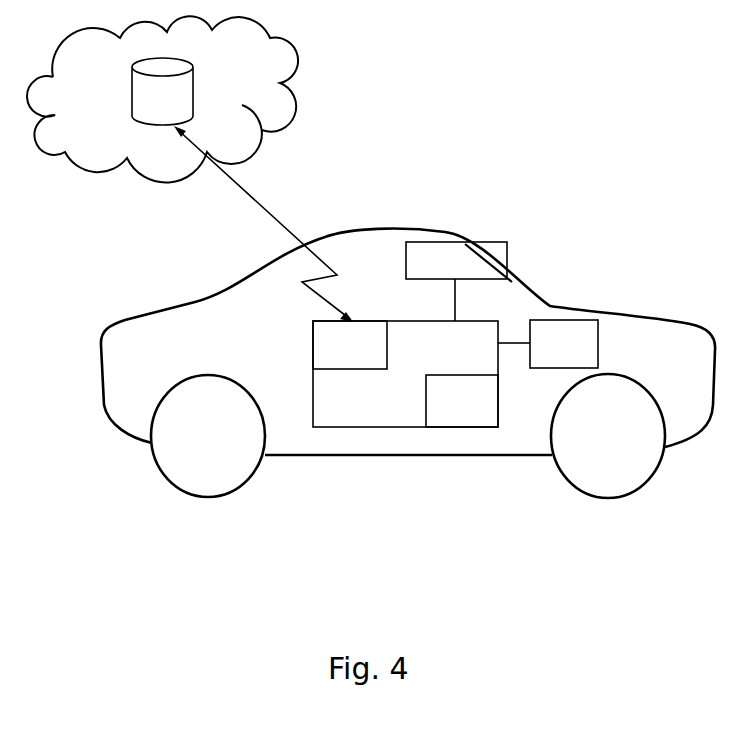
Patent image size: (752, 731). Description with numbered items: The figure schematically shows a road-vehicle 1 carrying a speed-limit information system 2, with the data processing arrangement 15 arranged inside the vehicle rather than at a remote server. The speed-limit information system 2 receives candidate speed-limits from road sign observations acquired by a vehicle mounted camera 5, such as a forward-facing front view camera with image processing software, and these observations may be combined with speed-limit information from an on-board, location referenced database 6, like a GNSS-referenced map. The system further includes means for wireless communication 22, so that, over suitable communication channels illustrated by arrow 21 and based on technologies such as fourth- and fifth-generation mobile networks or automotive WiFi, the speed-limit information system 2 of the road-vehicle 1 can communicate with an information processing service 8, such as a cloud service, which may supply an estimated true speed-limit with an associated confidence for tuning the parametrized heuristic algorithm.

The road-vehicle 1 is at (380, 224).
The speed-limit information system 2 is at (414, 387).
The vehicle mounted camera 5 is at (464, 272).
The location referenced database 6 is at (571, 358).
The information processing service 8 is at (153, 108).
The data processing arrangement 15 is at (446, 415).
The arrow 21 is at (252, 198).
The means for wireless communication 22 is at (332, 358).